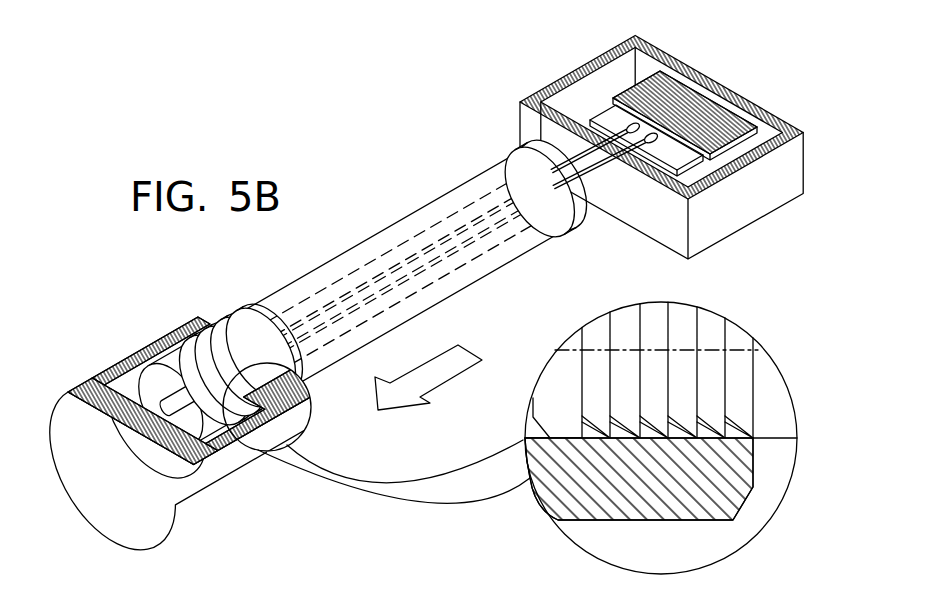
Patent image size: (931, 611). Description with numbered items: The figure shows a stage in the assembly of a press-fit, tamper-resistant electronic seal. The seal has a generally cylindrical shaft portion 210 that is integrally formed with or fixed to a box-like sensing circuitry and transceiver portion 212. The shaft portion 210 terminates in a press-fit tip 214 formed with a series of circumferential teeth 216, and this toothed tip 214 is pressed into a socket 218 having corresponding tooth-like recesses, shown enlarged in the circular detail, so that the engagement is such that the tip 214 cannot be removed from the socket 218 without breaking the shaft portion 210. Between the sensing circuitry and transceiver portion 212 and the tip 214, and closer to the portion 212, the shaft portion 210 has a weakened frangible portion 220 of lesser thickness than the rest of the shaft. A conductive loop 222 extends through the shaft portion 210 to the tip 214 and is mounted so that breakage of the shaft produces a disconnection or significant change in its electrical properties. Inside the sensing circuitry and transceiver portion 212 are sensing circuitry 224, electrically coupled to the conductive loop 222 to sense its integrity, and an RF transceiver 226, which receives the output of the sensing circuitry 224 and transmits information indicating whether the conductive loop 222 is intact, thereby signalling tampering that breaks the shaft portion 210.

The shaft portion 210 is at (345, 220).
The sensing circuitry and transceiver portion 212 is at (736, 216).
The press-fit tip 214 is at (207, 448).
The circumferential teeth 216 is at (224, 336).
The socket 218 is at (121, 369).
The frangible portion 220 is at (566, 217).
The conductive loop 222 is at (566, 134).
The sensing circuitry 224 is at (602, 118).
The RF transceiver 226 is at (693, 92).